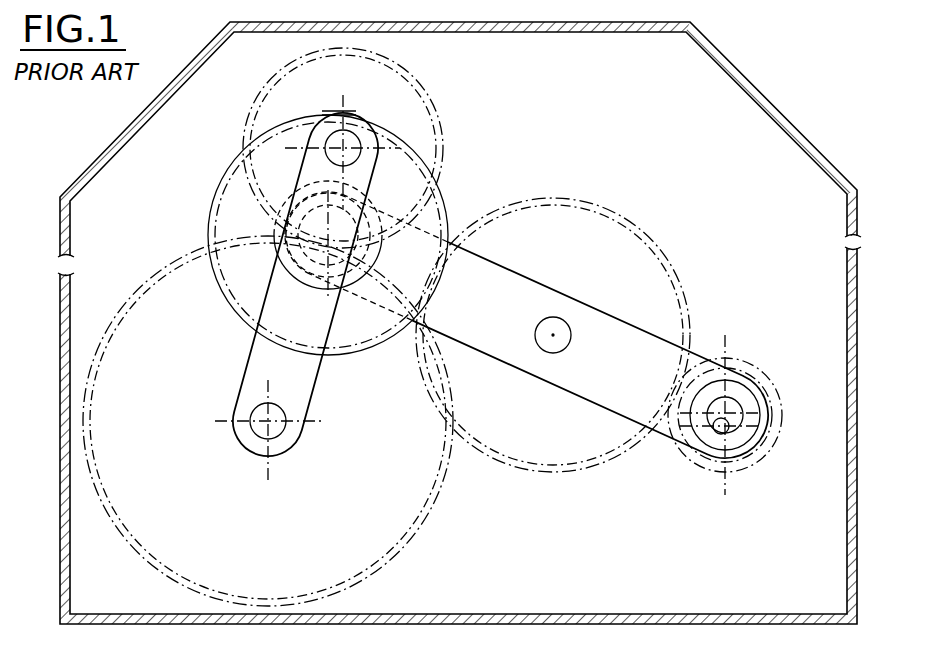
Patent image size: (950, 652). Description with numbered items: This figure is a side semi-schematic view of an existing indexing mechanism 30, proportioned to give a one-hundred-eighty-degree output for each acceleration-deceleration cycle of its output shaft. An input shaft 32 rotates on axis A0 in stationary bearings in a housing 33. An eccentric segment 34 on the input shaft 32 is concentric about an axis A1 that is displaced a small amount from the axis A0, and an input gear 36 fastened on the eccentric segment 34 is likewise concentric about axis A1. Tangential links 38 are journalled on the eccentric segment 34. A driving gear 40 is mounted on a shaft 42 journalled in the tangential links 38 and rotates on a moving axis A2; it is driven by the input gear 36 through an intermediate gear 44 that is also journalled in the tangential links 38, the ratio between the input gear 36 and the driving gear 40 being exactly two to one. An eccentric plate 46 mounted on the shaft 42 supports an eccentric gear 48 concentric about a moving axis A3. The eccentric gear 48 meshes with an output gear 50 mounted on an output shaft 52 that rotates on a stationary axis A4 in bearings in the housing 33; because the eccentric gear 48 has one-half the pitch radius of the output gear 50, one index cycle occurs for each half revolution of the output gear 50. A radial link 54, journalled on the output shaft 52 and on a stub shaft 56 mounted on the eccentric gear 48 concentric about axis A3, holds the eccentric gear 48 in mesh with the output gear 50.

The mechanism 30 is at (591, 332).
The input shaft 32 is at (752, 434).
The housing 33 is at (857, 207).
The eccentric segment 34 is at (752, 402).
The input gear 36 is at (765, 458).
The tangential links 38 is at (658, 340).
The driving gear 40 is at (455, 197).
The shaft 42 is at (335, 207).
The intermediate gear 44 is at (618, 209).
The eccentric plate 46 is at (292, 233).
The eccentric gear 48 is at (442, 120).
The output gear 50 is at (437, 503).
The output shaft 52 is at (253, 408).
The radial link 54 is at (250, 356).
The stub shaft 56 is at (336, 111).
The axis A0 is at (725, 415).
The axis A1 is at (725, 415).
The moving axis A2 is at (300, 232).
The moving axis A3 is at (345, 147).
The stationary axis A4 is at (270, 424).